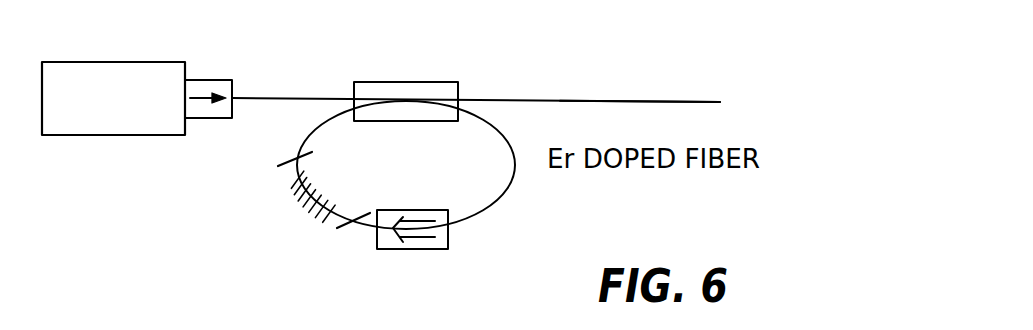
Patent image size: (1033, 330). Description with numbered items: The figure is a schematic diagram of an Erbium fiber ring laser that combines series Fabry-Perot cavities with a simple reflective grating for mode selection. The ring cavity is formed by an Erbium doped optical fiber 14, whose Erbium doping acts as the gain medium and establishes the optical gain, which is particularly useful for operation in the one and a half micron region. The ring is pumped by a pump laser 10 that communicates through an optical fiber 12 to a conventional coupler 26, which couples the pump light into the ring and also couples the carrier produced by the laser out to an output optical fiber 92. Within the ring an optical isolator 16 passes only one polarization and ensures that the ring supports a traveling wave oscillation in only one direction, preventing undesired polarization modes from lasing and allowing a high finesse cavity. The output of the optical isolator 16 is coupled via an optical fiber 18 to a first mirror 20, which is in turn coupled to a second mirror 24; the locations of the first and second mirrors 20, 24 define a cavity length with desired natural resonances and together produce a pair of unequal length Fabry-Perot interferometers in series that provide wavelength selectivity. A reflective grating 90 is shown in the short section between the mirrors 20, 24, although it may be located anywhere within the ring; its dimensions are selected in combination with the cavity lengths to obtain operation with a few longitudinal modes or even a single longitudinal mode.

The pump laser 10 is at (137, 68).
The optical fiber 12 is at (476, 70).
The Erbium doped optical fiber 14 is at (430, 165).
The optical isolator 16 is at (412, 252).
The optical fiber 18 is at (342, 253).
The first mirror 20 is at (382, 187).
The second mirror 24 is at (317, 147).
The coupler 26 is at (406, 77).
The grating 90 is at (295, 209).
The optical fiber 92 is at (640, 80).